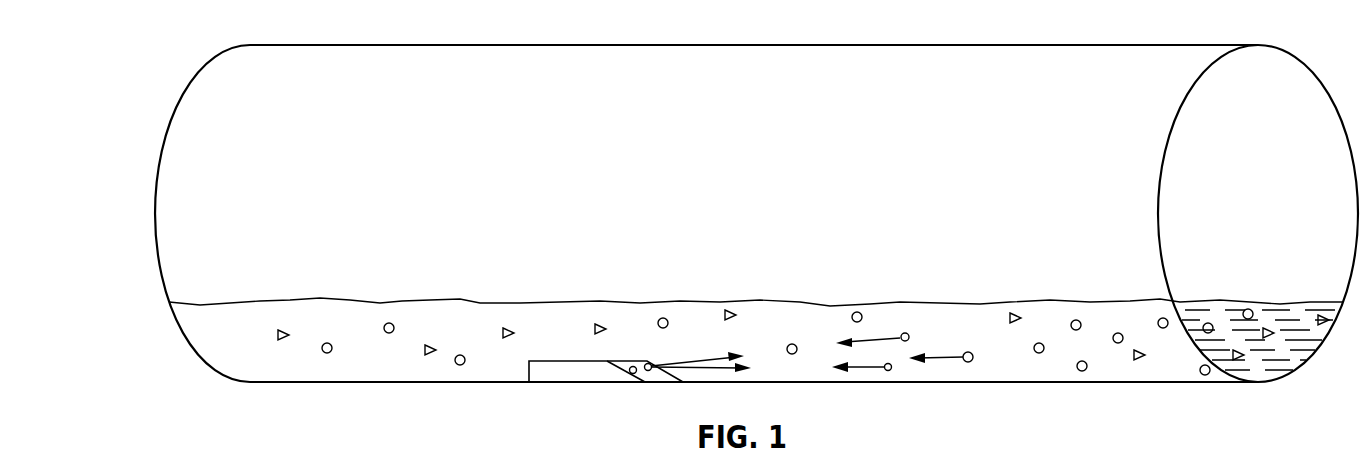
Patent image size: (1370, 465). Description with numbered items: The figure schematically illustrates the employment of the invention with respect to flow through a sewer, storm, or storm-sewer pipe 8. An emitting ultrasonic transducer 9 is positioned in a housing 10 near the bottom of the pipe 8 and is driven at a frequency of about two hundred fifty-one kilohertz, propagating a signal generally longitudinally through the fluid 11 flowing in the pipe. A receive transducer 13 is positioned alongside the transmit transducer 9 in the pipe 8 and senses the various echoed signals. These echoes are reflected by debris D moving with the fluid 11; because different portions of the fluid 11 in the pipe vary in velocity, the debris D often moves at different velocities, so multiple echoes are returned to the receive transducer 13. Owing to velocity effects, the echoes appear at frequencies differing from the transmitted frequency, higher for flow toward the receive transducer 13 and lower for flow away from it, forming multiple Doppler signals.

The pipe 8 is at (172, 88).
The emitting ultrasonic transducer 9 is at (648, 373).
The housing 10 is at (588, 361).
The fluid 11 is at (402, 300).
The receive transducer 13 is at (628, 376).
The debris D is at (964, 360).